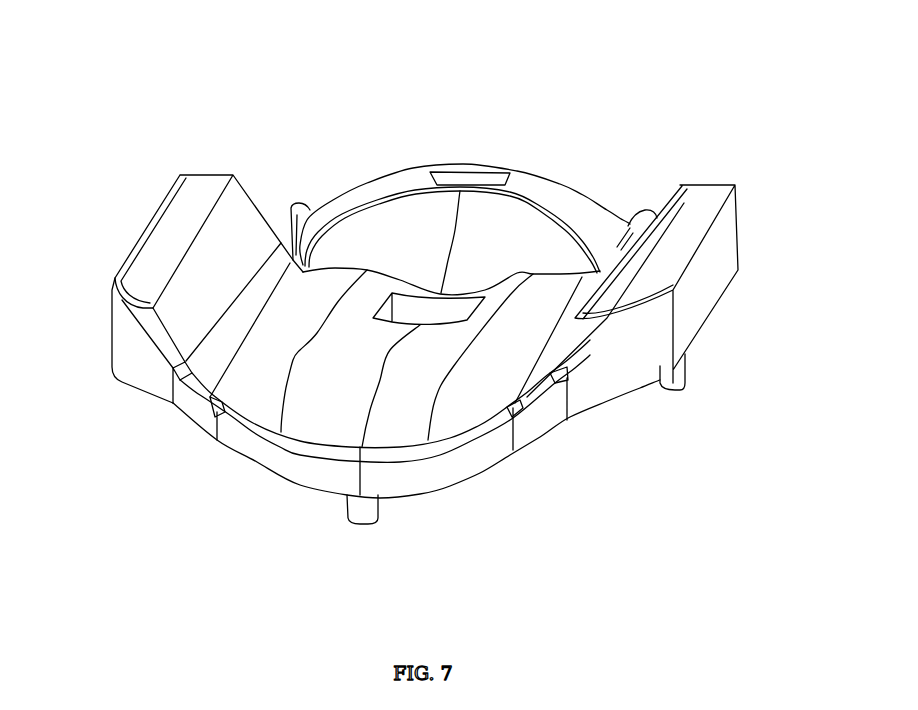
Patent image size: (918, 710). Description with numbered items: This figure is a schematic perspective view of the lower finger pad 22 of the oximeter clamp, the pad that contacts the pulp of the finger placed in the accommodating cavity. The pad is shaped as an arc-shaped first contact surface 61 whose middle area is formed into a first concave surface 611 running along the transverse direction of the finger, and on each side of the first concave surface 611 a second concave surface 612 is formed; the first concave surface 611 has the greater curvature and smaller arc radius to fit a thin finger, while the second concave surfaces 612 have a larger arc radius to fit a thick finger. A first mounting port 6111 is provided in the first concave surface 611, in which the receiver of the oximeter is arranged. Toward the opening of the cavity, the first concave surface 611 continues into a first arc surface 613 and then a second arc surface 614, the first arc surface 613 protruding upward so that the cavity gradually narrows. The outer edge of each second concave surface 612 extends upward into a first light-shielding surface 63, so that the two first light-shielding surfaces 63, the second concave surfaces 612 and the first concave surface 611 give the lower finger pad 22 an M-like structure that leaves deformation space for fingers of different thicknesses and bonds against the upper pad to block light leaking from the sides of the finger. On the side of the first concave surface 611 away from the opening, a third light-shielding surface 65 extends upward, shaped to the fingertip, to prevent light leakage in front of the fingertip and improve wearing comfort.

The lower finger pad 22 is at (465, 99).
The first contact surface 61 is at (732, 548).
The first concave surface 611 is at (428, 330).
The first mounting port 6111 is at (420, 312).
The second concave surface 612 is at (307, 292).
The first arc surface 613 is at (387, 365).
The second arc surface 614 is at (345, 412).
The first light-shielding surface 63 is at (243, 232).
The third light-shielding surface 65 is at (487, 228).